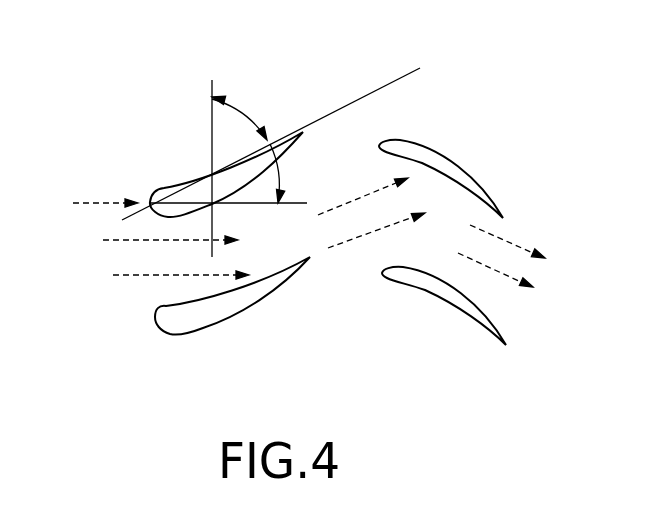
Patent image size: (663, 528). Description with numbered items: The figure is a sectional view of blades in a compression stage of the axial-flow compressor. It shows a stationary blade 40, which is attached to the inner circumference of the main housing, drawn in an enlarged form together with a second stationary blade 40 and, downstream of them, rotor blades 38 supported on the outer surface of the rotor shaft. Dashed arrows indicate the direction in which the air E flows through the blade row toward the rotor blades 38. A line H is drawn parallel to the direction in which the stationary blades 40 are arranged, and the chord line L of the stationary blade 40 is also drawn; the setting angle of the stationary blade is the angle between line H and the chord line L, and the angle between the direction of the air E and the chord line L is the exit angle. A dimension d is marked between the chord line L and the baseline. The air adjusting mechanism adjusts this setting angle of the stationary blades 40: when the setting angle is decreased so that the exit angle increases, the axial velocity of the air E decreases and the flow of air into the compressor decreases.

The rotor blades 38 is at (472, 168).
The stationary blades 40 is at (253, 308).
The air E is at (137, 276).
The line parallel to the direction in which the stationary blades are arranged H is at (211, 137).
The chord line L is at (353, 102).
The angle between chord line and axis d is at (282, 172).